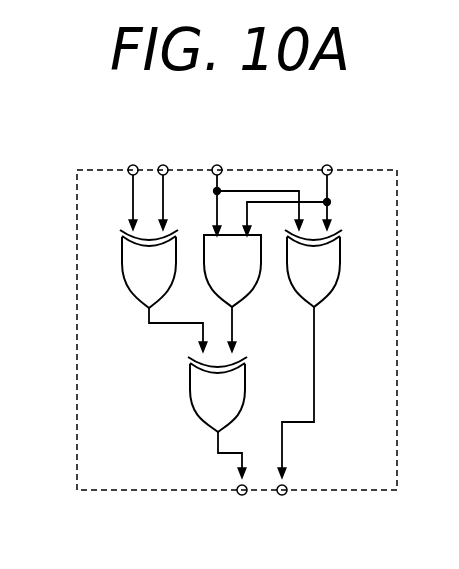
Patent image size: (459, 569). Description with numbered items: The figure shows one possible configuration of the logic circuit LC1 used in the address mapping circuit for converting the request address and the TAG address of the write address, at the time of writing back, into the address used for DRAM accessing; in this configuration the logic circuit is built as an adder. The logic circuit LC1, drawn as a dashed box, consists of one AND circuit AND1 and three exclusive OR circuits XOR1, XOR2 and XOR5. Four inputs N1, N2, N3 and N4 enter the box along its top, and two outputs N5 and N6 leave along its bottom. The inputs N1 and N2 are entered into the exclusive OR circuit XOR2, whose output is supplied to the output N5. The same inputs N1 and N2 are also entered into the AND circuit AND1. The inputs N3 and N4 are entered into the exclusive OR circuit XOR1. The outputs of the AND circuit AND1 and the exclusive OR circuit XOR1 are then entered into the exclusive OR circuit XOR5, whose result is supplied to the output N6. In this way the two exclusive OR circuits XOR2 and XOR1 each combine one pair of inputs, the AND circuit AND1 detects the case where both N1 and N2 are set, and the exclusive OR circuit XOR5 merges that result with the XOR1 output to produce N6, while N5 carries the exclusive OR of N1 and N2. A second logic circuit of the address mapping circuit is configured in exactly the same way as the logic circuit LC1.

The logic circuit LC1 is at (77, 322).
The input N1 is at (322, 168).
The input N2 is at (212, 168).
The input N3 is at (178, 158).
The input N4 is at (128, 168).
The output N5 is at (287, 493).
The output N6 is at (237, 493).
The exclusive OR circuit XOR1 is at (126, 282).
The exclusive OR circuit XOR2 is at (338, 282).
The exclusive OR circuit XOR5 is at (191, 393).
The AND circuit AND1 is at (258, 282).